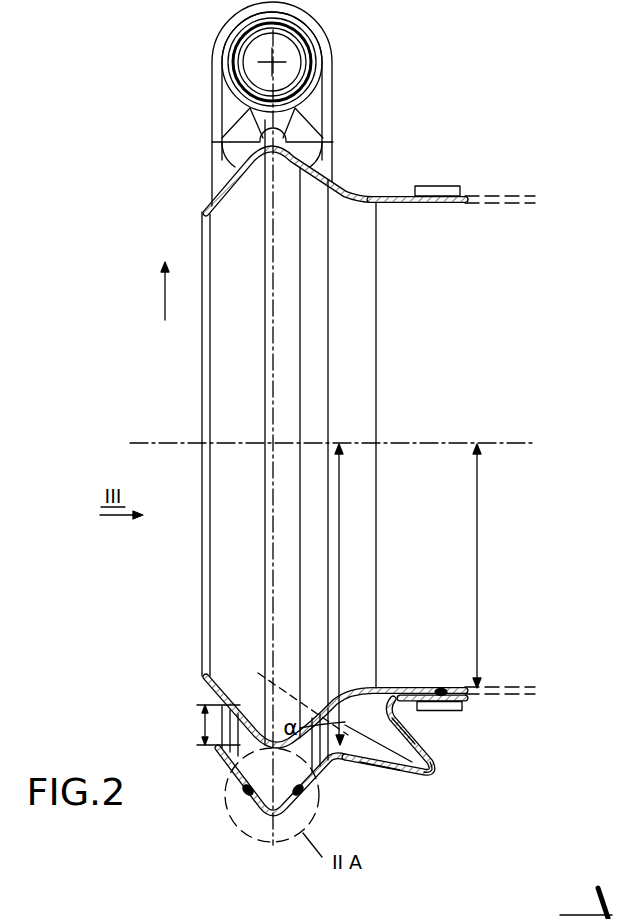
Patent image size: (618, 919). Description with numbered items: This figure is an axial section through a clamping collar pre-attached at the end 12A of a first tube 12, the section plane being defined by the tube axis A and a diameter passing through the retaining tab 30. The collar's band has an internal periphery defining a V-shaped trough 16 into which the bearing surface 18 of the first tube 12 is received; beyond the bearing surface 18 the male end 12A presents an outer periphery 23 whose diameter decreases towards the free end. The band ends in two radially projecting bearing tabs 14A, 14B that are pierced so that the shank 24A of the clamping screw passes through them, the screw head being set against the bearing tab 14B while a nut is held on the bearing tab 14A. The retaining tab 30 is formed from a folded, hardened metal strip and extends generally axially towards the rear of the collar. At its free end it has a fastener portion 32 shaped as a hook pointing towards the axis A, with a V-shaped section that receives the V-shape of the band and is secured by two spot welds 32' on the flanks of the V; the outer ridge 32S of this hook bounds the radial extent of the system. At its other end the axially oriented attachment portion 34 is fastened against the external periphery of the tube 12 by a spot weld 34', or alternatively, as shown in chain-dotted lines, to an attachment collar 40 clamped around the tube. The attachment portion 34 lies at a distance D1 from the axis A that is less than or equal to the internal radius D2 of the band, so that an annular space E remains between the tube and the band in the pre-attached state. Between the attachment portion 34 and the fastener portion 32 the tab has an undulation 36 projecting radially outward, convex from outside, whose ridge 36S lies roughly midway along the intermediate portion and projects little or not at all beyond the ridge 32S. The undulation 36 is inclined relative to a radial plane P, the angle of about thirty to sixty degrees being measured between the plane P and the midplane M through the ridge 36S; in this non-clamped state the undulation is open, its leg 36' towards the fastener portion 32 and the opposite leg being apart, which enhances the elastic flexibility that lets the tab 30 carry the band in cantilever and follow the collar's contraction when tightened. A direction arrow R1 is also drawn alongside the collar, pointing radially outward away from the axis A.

The first tube 12 is at (430, 203).
The end of the first tube 12A is at (366, 184).
The bearing tab 14A is at (600, 903).
The bearing tab 14B is at (317, 107).
The trough 16 is at (253, 738).
The bearing surface 18 is at (318, 148).
The outer periphery 23 is at (212, 205).
The shank of the screw 24A is at (287, 48).
The retaining tab 30 is at (414, 797).
The fastener portion 32 is at (264, 776).
The spot welds 32' is at (272, 801).
The ridge of the hook 32S is at (277, 843).
The attachment portion 34 is at (432, 666).
The spot weld 34' is at (451, 671).
The undulation 36 is at (435, 735).
The leg of the undulation 36' is at (380, 806).
The ridge of the undulation 36S is at (430, 770).
The attachment collar 40 is at (447, 186).
The axis A is at (155, 443).
The distance D1 is at (480, 563).
The internal radius of the band D2 is at (340, 586).
The annular space E is at (200, 723).
The midplane of the undulation M is at (380, 733).
The radial plane P is at (275, 556).
The direction R1 is at (151, 291).